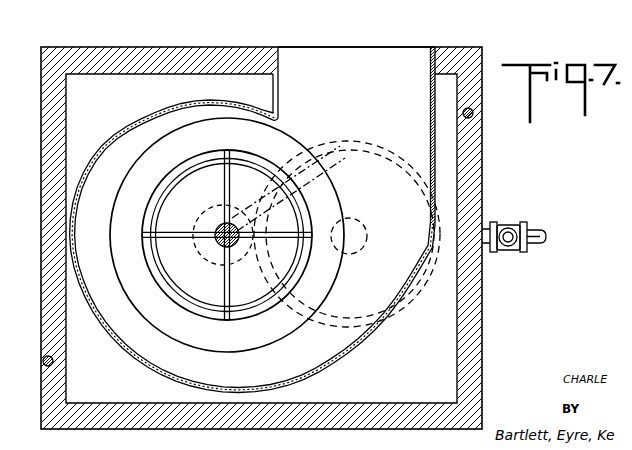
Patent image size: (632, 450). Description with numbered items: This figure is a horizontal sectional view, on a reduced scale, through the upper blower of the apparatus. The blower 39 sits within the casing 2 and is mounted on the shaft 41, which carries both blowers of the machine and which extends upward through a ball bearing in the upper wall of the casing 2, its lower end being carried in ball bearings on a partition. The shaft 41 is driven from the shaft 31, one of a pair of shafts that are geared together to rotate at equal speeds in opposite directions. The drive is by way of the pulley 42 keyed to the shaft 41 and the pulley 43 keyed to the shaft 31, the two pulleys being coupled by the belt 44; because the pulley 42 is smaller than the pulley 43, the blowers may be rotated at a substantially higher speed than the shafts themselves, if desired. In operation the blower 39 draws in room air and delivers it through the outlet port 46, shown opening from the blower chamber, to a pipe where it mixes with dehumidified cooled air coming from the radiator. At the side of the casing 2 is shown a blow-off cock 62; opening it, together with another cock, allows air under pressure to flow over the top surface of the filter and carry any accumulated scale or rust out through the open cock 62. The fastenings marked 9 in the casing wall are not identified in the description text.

The casing 2 is at (207, 58).
The outlet port 46 is at (366, 75).
The blower 39 is at (280, 140).
The shaft 41 is at (225, 222).
The pulley 42 is at (211, 246).
The belt 44 is at (245, 292).
The shaft 31 is at (353, 230).
The pulley 43 is at (410, 292).
The bolt 9 is at (474, 114).
The blow-off cock 62 is at (524, 229).